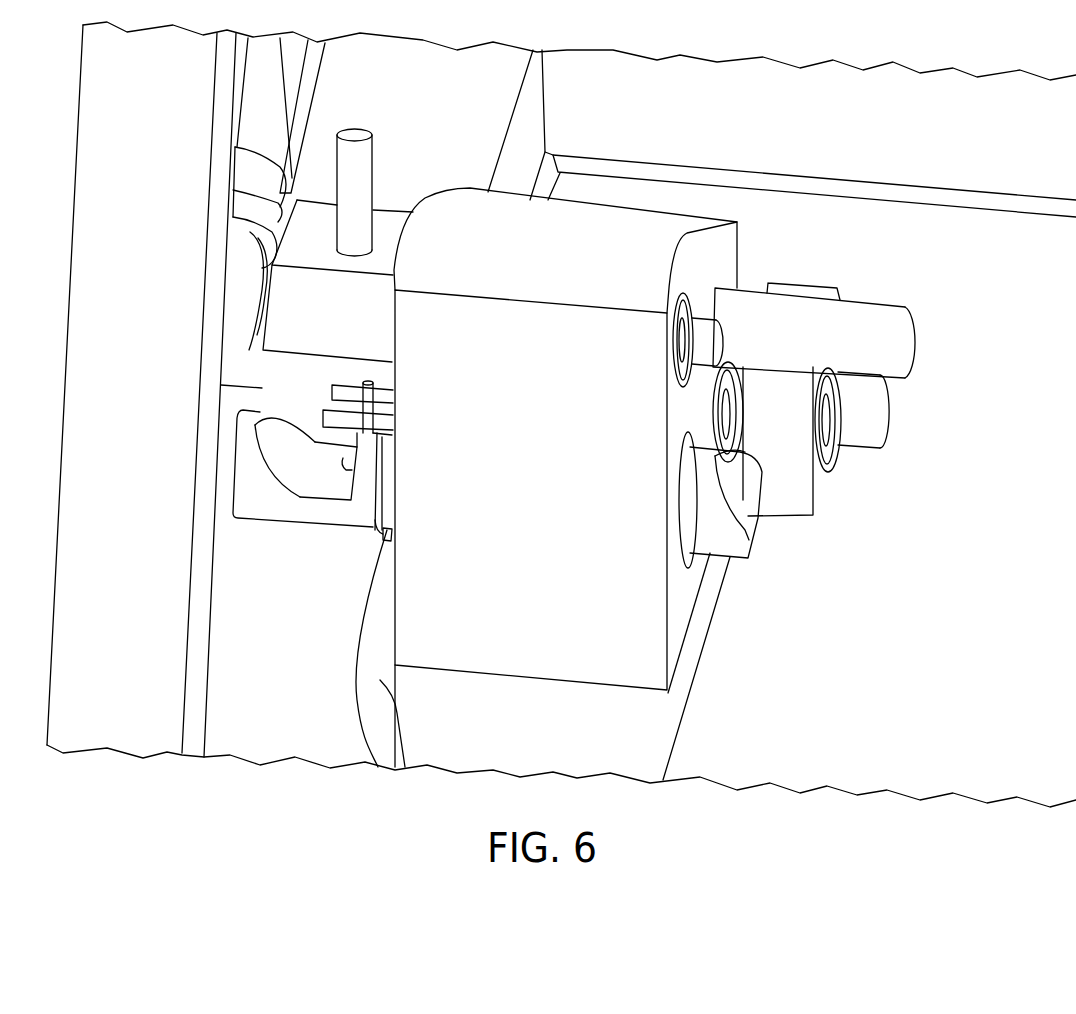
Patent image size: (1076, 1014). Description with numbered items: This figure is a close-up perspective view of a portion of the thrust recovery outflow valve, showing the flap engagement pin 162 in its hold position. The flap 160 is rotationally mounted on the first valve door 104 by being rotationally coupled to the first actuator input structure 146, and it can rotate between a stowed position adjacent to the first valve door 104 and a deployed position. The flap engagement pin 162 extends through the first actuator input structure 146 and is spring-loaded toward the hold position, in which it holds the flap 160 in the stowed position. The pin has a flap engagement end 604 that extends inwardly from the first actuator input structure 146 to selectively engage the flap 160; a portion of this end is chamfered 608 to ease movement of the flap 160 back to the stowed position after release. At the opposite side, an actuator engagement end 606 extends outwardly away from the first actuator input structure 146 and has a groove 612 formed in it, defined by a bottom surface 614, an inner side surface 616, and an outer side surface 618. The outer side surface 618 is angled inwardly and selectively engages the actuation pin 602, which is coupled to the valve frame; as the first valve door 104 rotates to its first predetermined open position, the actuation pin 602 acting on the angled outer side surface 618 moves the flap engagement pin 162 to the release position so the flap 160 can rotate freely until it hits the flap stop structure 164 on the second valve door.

The first valve door 104 is at (400, 703).
The first actuator input structure 146 is at (581, 283).
The flap 160 is at (1057, 764).
The flap engagement pin 162 is at (390, 502).
The flap stop structure 164 is at (961, 82).
The actuation pin 602 is at (376, 163).
The flap engagement end 604 is at (757, 533).
The actuator engagement end 606 is at (300, 513).
The chamfered portion 608 is at (745, 468).
The groove 612 is at (306, 408).
The bottom surface 614 is at (333, 490).
The inner side surface 616 is at (344, 465).
The outer side surface 618 is at (295, 455).